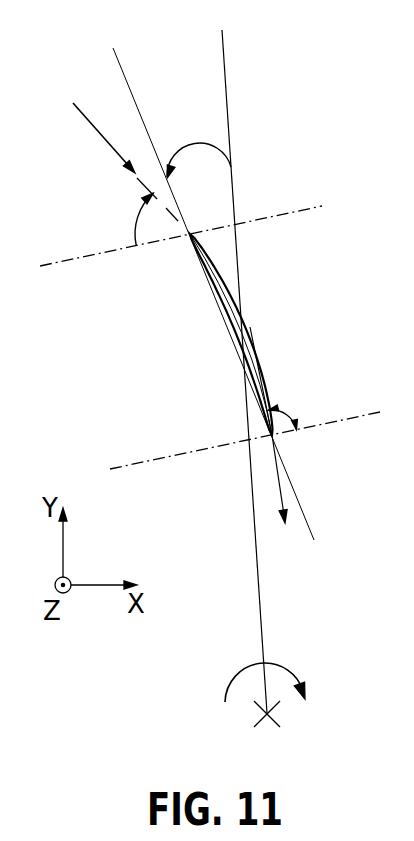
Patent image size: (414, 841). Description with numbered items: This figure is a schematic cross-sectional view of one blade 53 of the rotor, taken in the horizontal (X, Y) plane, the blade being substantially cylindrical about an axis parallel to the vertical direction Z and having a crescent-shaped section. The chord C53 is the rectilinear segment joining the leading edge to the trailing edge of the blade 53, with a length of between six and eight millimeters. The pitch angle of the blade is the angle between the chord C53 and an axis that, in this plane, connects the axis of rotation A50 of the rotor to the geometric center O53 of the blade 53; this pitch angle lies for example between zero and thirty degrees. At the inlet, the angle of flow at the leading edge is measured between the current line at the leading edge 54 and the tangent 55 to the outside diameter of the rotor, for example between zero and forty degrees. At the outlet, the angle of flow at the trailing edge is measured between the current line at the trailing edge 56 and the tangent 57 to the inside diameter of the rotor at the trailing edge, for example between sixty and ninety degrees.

The blade 53 is at (222, 275).
The current line at the leading edge 54 is at (77, 109).
The tangent to the outside diameter of the rotor 55 is at (62, 259).
The current line at the trailing edge 56 is at (280, 487).
The tangent to the inside diameter of the rotor at the trailing edge 57 is at (148, 461).
The chord of the blade C53 is at (222, 313).
The geometric center of the blade O53 is at (243, 325).
The axis of rotation of the rotor A50 is at (258, 717).